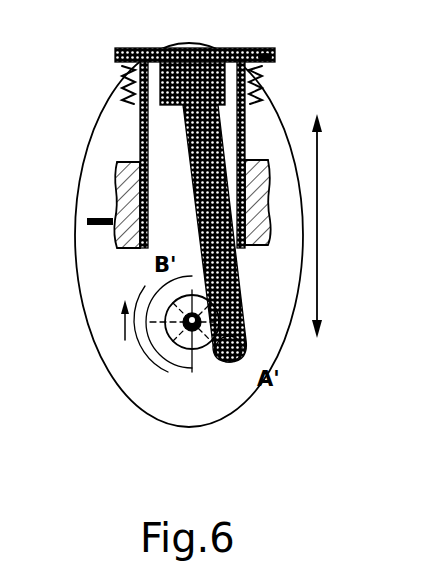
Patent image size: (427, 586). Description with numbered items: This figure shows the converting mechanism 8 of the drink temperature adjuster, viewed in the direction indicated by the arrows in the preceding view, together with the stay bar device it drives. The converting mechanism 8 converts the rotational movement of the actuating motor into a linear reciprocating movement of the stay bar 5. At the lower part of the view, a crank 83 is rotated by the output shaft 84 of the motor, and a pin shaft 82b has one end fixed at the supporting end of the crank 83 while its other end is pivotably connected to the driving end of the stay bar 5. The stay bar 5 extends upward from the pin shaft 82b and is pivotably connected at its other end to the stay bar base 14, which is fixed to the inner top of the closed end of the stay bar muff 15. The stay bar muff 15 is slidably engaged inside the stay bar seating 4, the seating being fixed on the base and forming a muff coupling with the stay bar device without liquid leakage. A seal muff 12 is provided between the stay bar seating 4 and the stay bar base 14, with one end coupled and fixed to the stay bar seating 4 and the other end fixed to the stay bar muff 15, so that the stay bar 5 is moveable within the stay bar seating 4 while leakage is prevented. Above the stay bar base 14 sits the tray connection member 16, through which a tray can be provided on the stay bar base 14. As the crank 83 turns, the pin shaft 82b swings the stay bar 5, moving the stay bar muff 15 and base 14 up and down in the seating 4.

The tray connection member 16 is at (115, 54).
The stay bar base 14 is at (265, 63).
The seal muff 12 is at (124, 86).
The stay bar muff 15 is at (258, 106).
The stay bar seating 4 is at (130, 196).
The converting mechanism 8 is at (285, 210).
The stay bar 5 is at (231, 270).
The pin shaft 82b is at (283, 340).
The crank 83 is at (172, 340).
The output shaft 84 is at (182, 318).